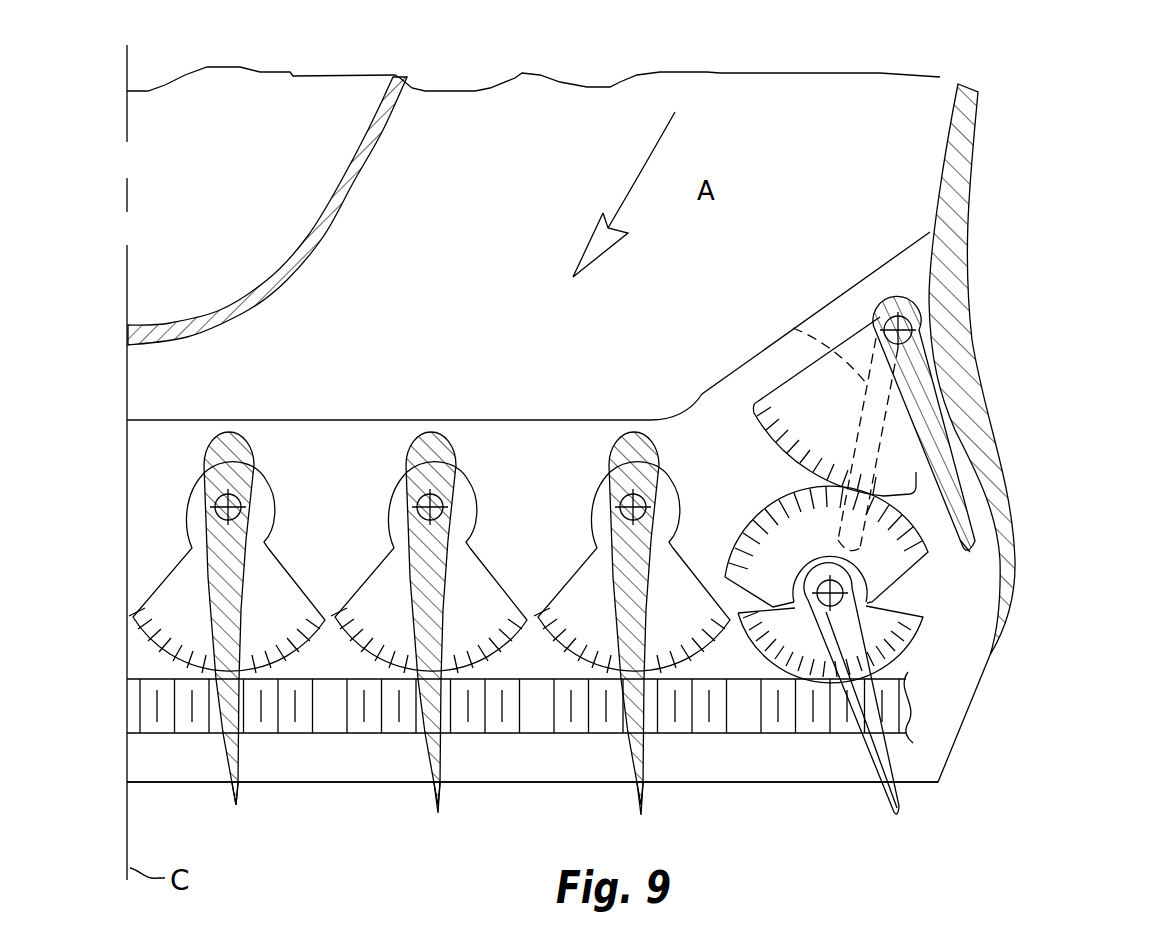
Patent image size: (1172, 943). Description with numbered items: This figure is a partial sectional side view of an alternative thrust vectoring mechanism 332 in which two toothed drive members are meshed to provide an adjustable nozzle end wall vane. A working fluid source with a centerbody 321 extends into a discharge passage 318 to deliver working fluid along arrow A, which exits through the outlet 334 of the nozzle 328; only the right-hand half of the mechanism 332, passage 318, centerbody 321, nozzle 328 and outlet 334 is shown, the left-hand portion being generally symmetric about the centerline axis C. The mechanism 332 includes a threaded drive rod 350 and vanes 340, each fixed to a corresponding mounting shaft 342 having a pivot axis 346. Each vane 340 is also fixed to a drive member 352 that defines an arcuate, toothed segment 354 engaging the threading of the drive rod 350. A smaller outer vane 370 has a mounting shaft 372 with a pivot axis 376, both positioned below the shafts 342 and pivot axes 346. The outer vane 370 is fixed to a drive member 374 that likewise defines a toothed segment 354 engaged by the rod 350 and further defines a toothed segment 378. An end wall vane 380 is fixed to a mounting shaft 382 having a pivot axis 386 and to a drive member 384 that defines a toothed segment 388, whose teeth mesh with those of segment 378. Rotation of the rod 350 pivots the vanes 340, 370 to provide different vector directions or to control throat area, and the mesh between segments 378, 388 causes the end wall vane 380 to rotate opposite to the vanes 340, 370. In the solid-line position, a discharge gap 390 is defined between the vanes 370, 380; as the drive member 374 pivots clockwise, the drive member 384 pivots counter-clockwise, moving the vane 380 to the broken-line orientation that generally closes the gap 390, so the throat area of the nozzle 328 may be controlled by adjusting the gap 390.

The discharge passage 318 is at (937, 115).
The centerbody 321 is at (367, 173).
The nozzle 328 is at (1031, 558).
The thrust vectoring mechanism 332 is at (1050, 256).
The outlet 334 is at (188, 783).
The vanes 340 is at (236, 803).
The mounting shaft 342 is at (238, 490).
The pivot axis 346 is at (197, 508).
The threaded drive rod 350 is at (165, 738).
The drive member 352 is at (188, 536).
The toothed segment 354 is at (173, 657).
The outer vane 370 is at (896, 810).
The mounting shaft 372 is at (866, 580).
The drive member 374 is at (864, 593).
The pivot axis 376 is at (905, 648).
The toothed segment 378 is at (736, 574).
The end wall vane 380 is at (790, 327).
The mounting shaft 382 is at (913, 314).
The drive member 384 is at (815, 406).
The pivot axis 386 is at (885, 300).
The toothed segment 388 is at (756, 408).
The discharge gap 390 is at (950, 527).